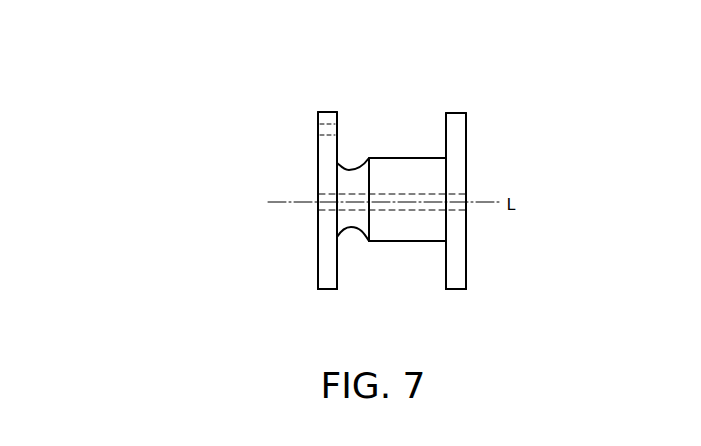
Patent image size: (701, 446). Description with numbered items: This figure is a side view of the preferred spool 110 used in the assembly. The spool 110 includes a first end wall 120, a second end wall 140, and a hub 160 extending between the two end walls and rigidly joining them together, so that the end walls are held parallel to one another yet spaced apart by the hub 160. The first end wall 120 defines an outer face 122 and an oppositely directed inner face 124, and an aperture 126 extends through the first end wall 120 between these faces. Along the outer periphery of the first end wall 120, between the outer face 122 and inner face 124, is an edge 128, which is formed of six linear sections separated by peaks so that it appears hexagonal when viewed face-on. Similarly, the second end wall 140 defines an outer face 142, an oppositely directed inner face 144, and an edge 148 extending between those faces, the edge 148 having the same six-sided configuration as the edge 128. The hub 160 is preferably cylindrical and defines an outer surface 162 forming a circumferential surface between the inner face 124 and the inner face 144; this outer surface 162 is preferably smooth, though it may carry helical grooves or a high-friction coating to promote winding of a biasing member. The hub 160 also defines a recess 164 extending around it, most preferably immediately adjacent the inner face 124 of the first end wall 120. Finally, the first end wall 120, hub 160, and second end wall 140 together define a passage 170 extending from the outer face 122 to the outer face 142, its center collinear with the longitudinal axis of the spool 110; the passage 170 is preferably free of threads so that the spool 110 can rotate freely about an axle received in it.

The spool 110 is at (200, 102).
The first end wall 120 is at (323, 112).
The outer face 122 is at (318, 155).
The inner face 124 is at (337, 143).
The aperture 126 is at (320, 130).
The edge 128 is at (330, 291).
The second end wall 140 is at (460, 112).
The outer face 142 is at (467, 130).
The inner face 144 is at (445, 140).
The edge 148 is at (460, 291).
The hub 160 is at (404, 160).
The outer surface 162 is at (427, 225).
The recess 164 is at (357, 235).
The passage 170 is at (318, 205).